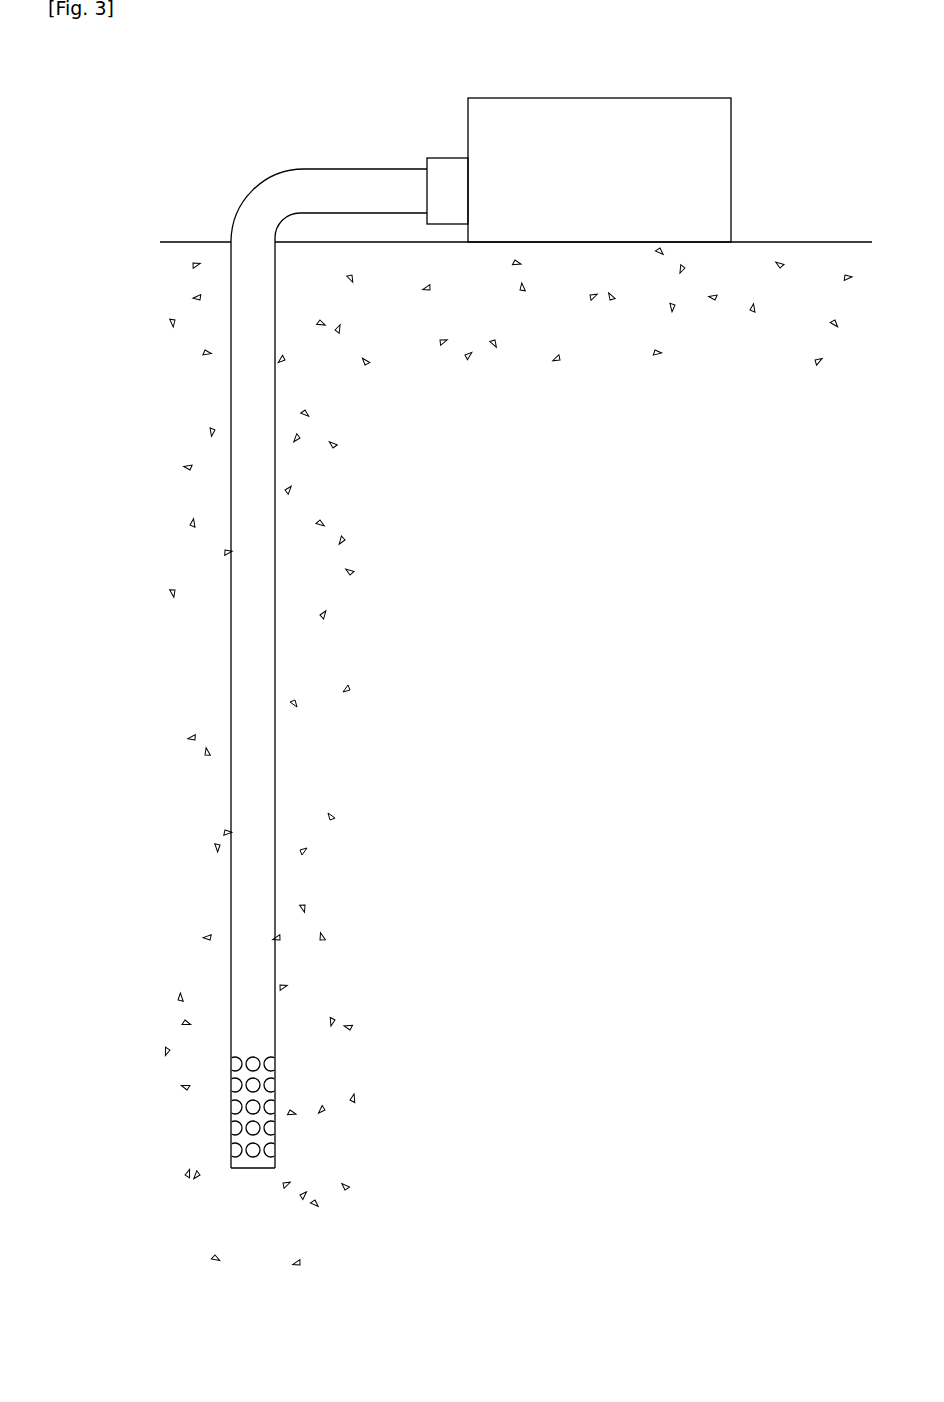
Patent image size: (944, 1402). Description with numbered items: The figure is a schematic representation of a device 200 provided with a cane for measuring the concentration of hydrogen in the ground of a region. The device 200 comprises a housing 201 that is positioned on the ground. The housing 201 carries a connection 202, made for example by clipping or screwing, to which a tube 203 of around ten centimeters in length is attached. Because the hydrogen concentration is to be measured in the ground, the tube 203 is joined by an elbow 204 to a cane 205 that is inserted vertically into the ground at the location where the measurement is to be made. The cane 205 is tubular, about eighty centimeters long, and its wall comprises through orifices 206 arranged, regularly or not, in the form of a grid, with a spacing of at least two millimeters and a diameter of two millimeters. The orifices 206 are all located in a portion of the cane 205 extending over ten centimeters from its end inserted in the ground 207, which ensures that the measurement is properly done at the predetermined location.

The device 200 is at (124, 135).
The housing 201 is at (613, 182).
The connection 202 is at (442, 173).
The tube 203 is at (393, 190).
The elbow 204 is at (250, 207).
The cane 205 is at (258, 700).
The through orifices 206 is at (275, 1128).
The end inserted in the ground 207 is at (250, 1170).